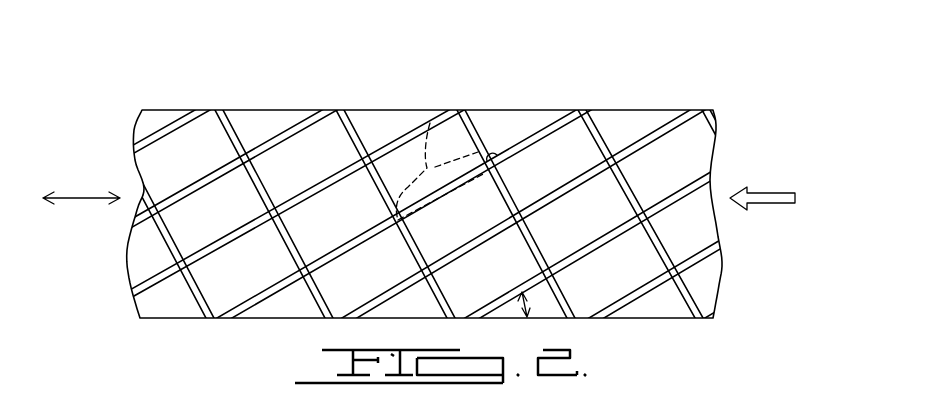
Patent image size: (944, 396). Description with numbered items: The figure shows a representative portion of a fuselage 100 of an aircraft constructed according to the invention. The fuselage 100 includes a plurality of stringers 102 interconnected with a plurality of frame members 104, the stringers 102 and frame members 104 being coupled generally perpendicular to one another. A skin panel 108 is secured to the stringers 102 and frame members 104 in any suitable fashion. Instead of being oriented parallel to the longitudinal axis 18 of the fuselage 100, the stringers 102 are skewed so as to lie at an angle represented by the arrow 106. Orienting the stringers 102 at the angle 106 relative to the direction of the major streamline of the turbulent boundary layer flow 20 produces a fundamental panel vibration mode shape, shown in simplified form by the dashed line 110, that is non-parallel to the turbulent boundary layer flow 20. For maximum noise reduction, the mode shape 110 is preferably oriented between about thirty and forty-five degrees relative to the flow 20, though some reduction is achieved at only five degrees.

The fuselage 100 is at (144, 99).
The stringers 102 is at (263, 292).
The frame members 104 is at (262, 187).
The angle 106 is at (530, 300).
The skin panel 108 is at (255, 120).
The fundamental panel vibration mode shape 110 is at (430, 123).
The longitudinal axis 18 is at (77, 197).
The turbulent boundary layer flow 20 is at (760, 190).